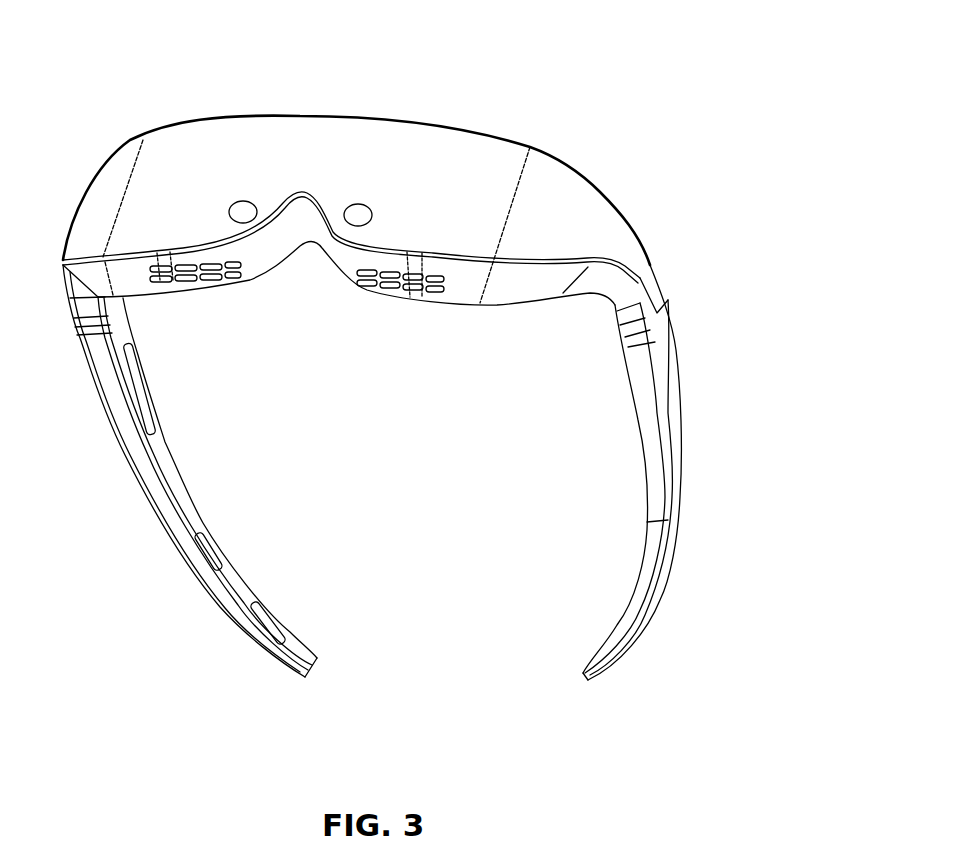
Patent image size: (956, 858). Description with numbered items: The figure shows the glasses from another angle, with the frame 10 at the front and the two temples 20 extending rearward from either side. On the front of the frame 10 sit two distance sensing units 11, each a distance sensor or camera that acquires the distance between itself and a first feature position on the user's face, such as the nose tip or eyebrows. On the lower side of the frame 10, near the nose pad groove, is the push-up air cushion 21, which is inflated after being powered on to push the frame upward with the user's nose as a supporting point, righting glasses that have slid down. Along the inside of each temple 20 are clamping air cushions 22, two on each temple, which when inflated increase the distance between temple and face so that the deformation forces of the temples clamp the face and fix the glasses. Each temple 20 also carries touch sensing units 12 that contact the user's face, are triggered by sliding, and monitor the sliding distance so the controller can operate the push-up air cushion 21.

The frame 10 is at (182, 162).
The distance sensing unit 11 is at (243, 210).
The touch sensing unit 12 is at (210, 555).
The temple 20 is at (313, 653).
The push-up air cushion 21 is at (255, 263).
The clamping air cushion 22 is at (137, 375).